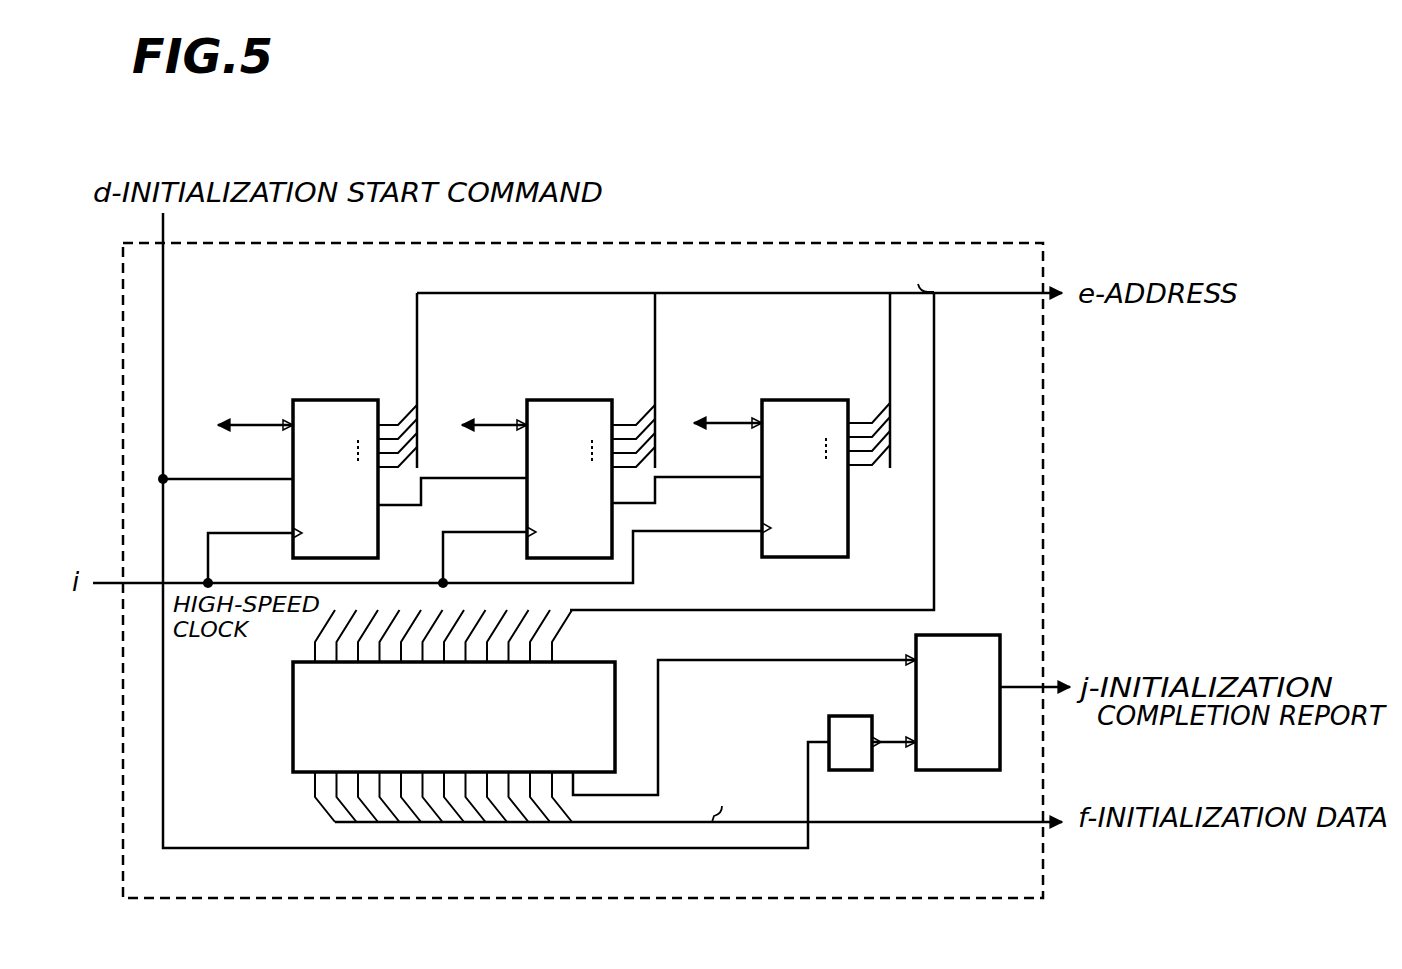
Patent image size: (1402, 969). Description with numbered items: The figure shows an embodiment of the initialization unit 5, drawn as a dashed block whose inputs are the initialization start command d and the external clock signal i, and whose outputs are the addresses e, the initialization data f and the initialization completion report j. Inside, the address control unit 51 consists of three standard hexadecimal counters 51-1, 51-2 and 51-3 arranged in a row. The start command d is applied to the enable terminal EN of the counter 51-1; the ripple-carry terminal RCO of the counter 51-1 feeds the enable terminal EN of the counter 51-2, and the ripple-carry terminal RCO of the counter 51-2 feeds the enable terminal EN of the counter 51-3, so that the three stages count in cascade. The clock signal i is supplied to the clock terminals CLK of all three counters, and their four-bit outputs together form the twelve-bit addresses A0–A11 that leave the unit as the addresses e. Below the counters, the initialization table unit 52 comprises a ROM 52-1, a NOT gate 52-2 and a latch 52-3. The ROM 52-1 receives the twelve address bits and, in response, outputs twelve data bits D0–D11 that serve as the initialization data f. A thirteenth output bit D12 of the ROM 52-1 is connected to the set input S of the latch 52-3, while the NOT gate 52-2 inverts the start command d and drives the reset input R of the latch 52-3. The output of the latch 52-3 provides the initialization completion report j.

The initialization unit 5 is at (820, 242).
The address control unit 51 is at (500, 366).
The counter 51-1 is at (312, 399).
The counter 51-2 is at (548, 400).
The counter 51-3 is at (782, 400).
The initialization table unit 52 is at (746, 732).
The ROM 52-1 is at (293, 693).
The NOT gate 52-2 is at (851, 771).
The latch 52-3 is at (930, 634).